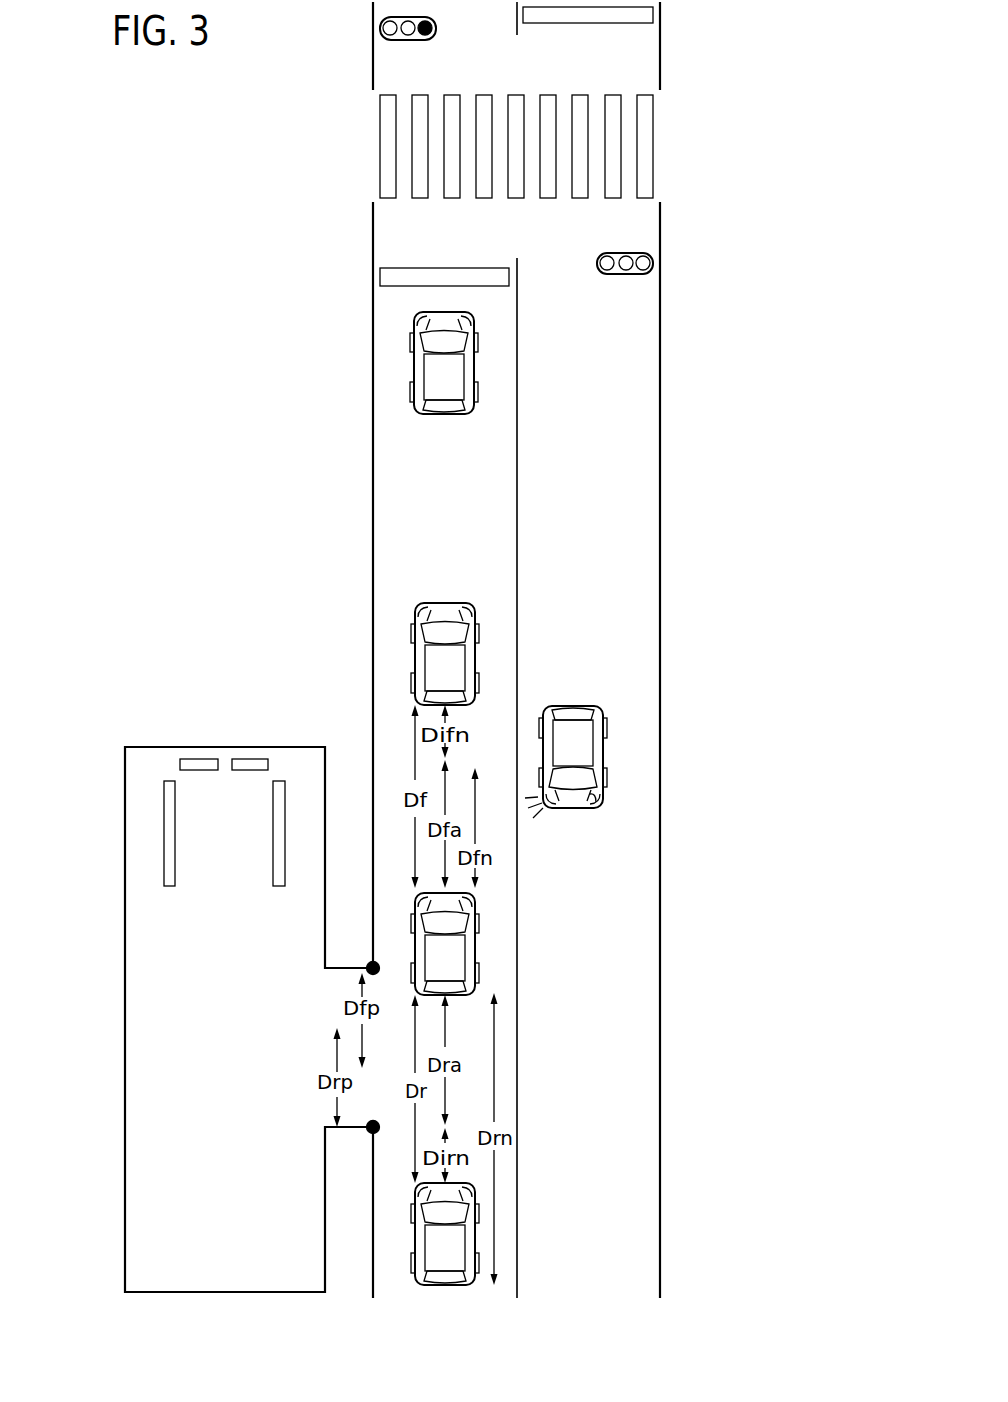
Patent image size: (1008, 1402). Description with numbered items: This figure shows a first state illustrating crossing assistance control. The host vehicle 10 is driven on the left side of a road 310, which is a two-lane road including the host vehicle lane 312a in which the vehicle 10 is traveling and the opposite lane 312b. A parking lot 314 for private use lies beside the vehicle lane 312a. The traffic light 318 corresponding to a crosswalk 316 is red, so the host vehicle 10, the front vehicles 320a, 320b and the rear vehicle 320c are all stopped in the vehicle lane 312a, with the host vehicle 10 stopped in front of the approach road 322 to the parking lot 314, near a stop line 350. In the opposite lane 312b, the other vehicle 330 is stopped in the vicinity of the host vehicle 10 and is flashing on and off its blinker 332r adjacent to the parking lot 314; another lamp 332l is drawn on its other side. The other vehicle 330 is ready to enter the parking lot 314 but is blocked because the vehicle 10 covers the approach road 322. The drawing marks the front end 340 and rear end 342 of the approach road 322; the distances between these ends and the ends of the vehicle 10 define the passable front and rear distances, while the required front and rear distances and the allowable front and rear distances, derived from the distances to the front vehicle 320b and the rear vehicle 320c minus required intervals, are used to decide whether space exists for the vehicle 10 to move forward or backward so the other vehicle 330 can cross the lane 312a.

The vehicle 10 is at (467, 950).
The road 310 is at (748, 492).
The host vehicle lane 312a is at (473, 528).
The opposite lane 312b is at (622, 540).
The parking lot 314 is at (161, 753).
The crosswalk 316 is at (675, 121).
The traffic light 318 is at (390, 28).
The front vehicle 320a is at (447, 405).
The front vehicle 320b is at (440, 610).
The rear vehicle 320c is at (467, 1238).
The approach road 322 is at (313, 1133).
The other vehicle 330 is at (575, 717).
The left headlight 332l is at (598, 802).
The blinker 332r is at (550, 807).
The front end of the approach road 340 is at (372, 966).
The rear end of the approach road 342 is at (373, 1127).
The stop line 350 is at (437, 275).